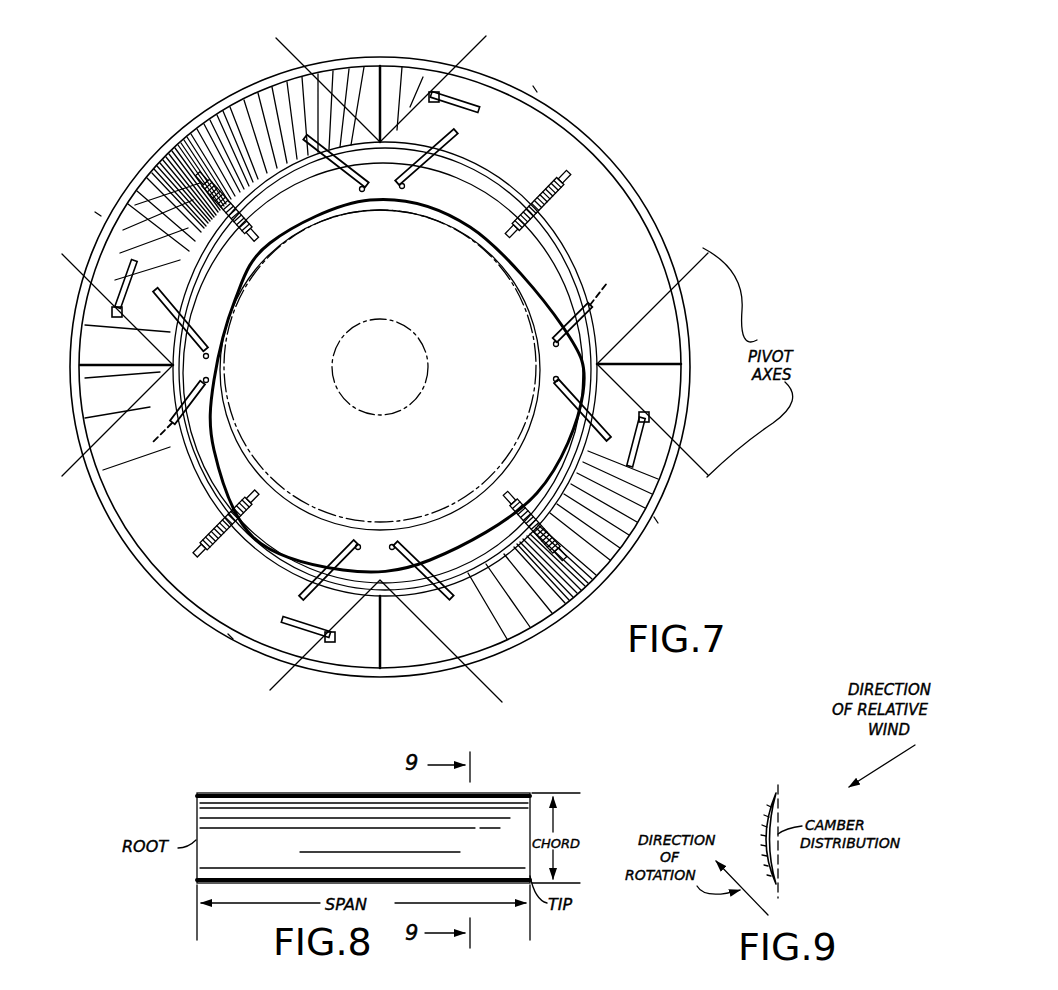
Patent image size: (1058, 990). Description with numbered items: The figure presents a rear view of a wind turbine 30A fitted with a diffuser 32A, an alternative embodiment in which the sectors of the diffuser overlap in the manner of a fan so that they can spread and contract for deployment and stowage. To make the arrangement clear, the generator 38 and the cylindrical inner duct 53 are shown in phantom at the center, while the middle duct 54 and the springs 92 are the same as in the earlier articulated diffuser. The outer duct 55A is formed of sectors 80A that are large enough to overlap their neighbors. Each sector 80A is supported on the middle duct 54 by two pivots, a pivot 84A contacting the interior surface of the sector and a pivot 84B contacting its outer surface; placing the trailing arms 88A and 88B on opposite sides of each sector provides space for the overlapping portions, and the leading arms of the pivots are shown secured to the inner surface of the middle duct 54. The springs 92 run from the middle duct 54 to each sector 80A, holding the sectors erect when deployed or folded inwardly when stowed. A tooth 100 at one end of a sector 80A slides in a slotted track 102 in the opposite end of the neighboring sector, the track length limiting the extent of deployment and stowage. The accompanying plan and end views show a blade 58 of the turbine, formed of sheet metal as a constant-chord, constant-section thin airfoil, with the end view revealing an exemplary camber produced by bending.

In FIG. 7, the wind turbine 30A is at (604, 120).
In FIG. 7, the diffuser 32A is at (566, 103).
In FIG. 7, the outer duct 55A is at (645, 194).
In FIG. 7, the sectors 80A is at (250, 112).
In FIG. 7, the springs 92 is at (203, 197).
In FIG. 7, the pivot 84A is at (458, 146).
In FIG. 7, the pivot 84B is at (563, 312).
In FIG. 7, the trailing arm 88A is at (446, 162).
In FIG. 7, the trailing arm 88B is at (598, 299).
In FIG. 7, the generator 38 is at (398, 326).
In FIG. 7, the inner duct 53 is at (236, 413).
In FIG. 7, the middle duct 54 is at (273, 528).
In FIG. 7, the tooth 100 is at (436, 93).
In FIG. 7, the slotted track 102 is at (474, 106).
In FIG. 8, the blade 58 is at (289, 800).
In FIG. 9, the blade 58 is at (773, 800).